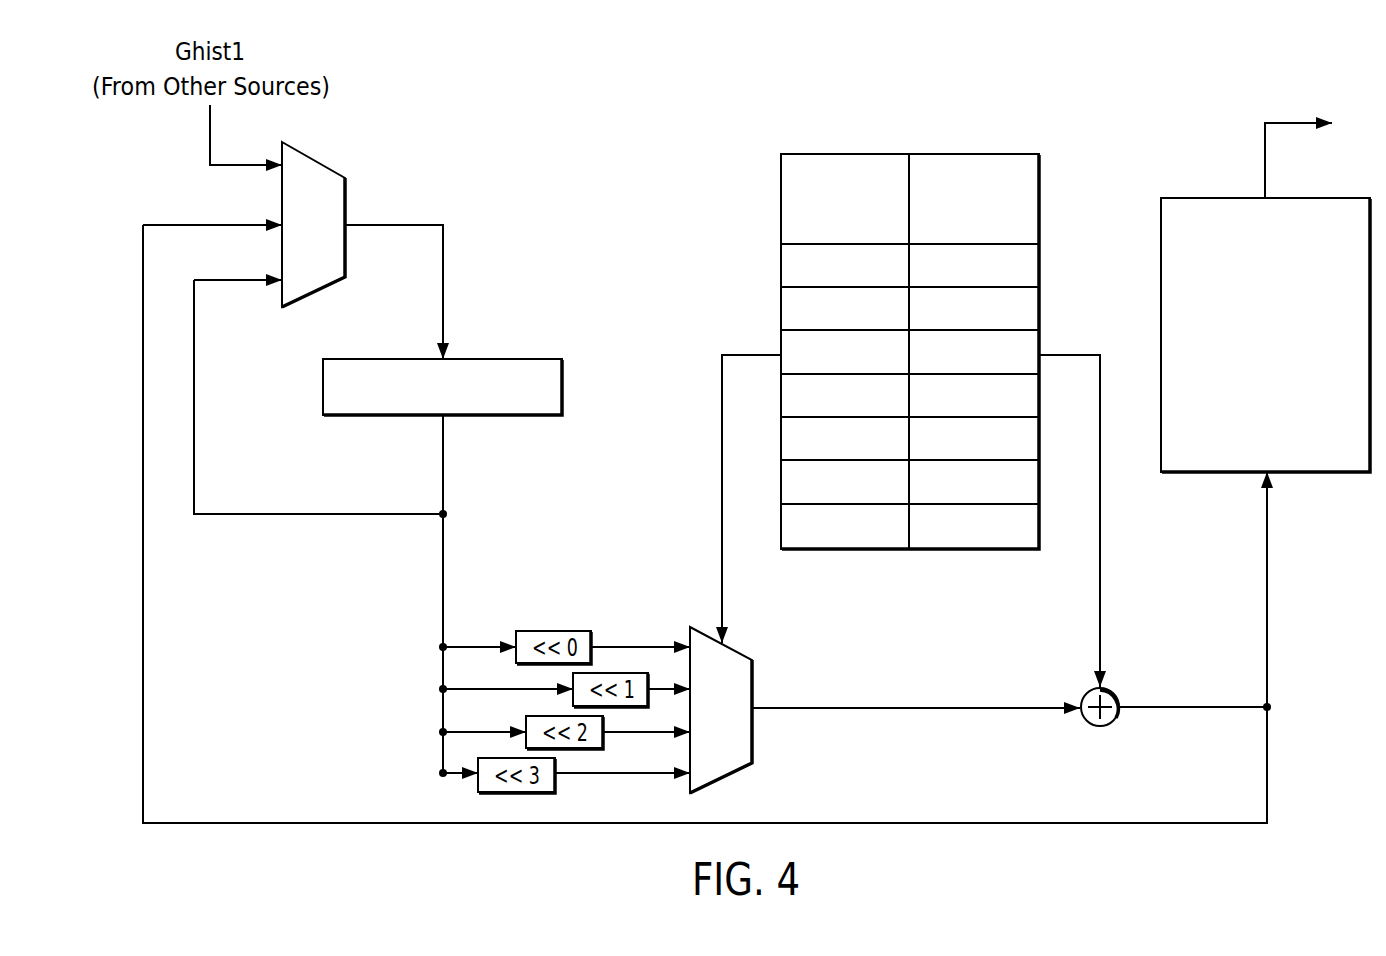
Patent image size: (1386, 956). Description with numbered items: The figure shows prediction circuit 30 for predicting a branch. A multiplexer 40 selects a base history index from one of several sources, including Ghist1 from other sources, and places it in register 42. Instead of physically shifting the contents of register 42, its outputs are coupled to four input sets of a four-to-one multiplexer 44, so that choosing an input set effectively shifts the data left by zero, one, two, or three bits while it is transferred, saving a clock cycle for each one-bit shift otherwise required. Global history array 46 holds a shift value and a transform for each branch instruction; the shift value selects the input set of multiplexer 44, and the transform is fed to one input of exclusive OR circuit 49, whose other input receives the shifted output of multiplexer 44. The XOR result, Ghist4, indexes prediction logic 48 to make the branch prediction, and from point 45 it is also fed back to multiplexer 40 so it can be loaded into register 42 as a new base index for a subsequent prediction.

The prediction circuit 30 is at (497, 49).
The multiplexer 40 is at (318, 157).
The register 42 is at (497, 358).
The four-to-one multiplexer 44 is at (737, 650).
The point 45 is at (1272, 705).
The global history array 46 is at (909, 153).
The prediction logic 48 is at (1211, 197).
The exclusive OR (XOR) circuit 49 is at (1112, 722).